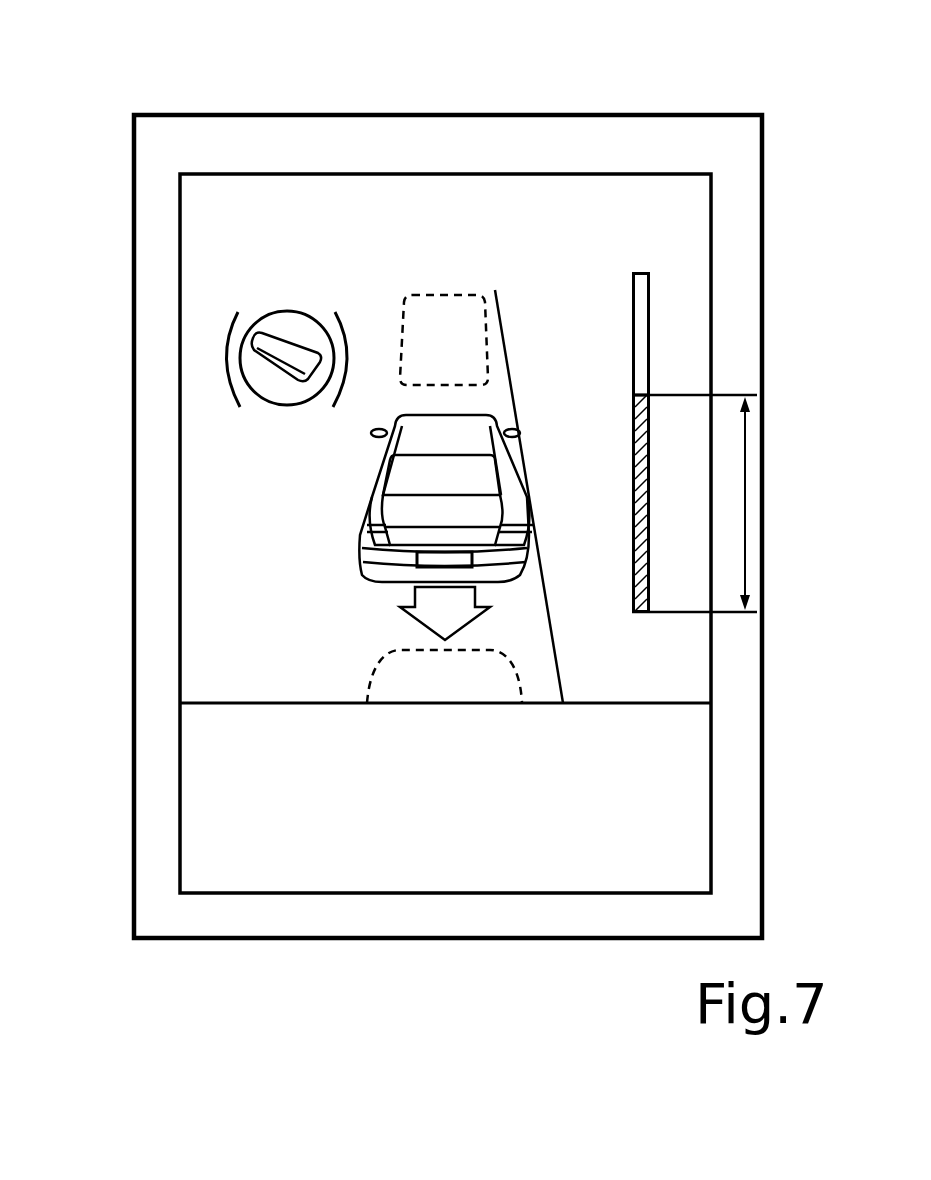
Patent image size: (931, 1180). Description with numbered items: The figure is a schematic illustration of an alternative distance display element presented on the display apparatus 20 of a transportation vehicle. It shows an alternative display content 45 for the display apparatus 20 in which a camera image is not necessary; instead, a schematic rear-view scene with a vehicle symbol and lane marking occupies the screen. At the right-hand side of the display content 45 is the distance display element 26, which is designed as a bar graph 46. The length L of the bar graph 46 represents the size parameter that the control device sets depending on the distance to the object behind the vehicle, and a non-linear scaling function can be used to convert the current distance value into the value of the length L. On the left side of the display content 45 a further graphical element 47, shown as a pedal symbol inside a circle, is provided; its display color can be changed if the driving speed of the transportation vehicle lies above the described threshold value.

The display apparatus 20 is at (279, 113).
The display content 45 is at (470, 145).
The graphical element 47 is at (225, 330).
The distance display element 26 is at (650, 279).
The bar graph 46 is at (634, 420).
The length L is at (745, 485).